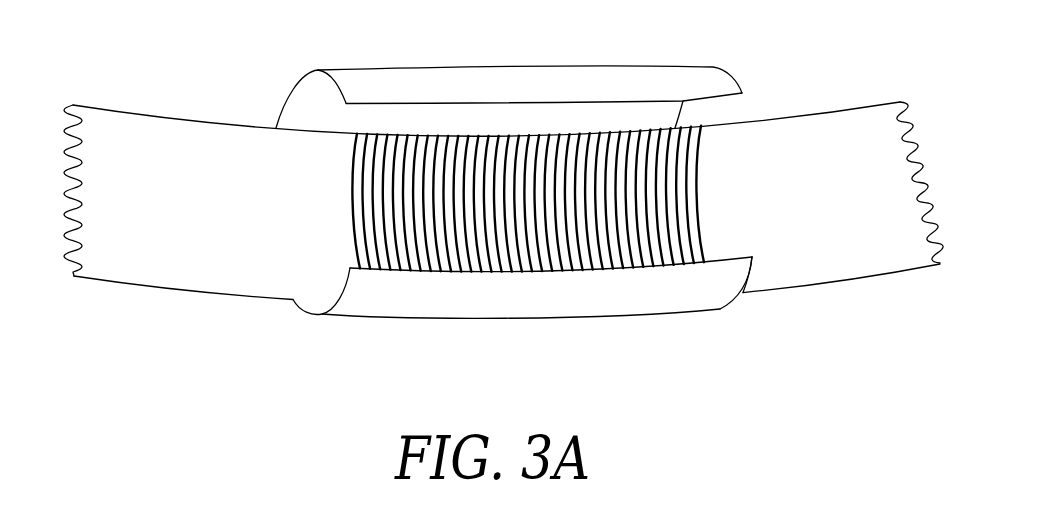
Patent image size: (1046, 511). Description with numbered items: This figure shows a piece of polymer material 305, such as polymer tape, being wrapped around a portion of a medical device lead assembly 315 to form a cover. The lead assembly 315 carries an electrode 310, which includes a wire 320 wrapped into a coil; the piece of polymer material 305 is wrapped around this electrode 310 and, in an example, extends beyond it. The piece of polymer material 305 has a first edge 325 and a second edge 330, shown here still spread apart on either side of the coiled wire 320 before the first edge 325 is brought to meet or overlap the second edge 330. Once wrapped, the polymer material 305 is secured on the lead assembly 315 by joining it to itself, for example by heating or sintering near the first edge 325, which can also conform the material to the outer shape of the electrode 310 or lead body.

The piece of polymer material 305 is at (305, 69).
The electrode 310 is at (357, 184).
The lead assembly 315 is at (230, 298).
The wire 320 is at (705, 165).
The first edge 325 is at (738, 95).
The second edge 330 is at (745, 256).